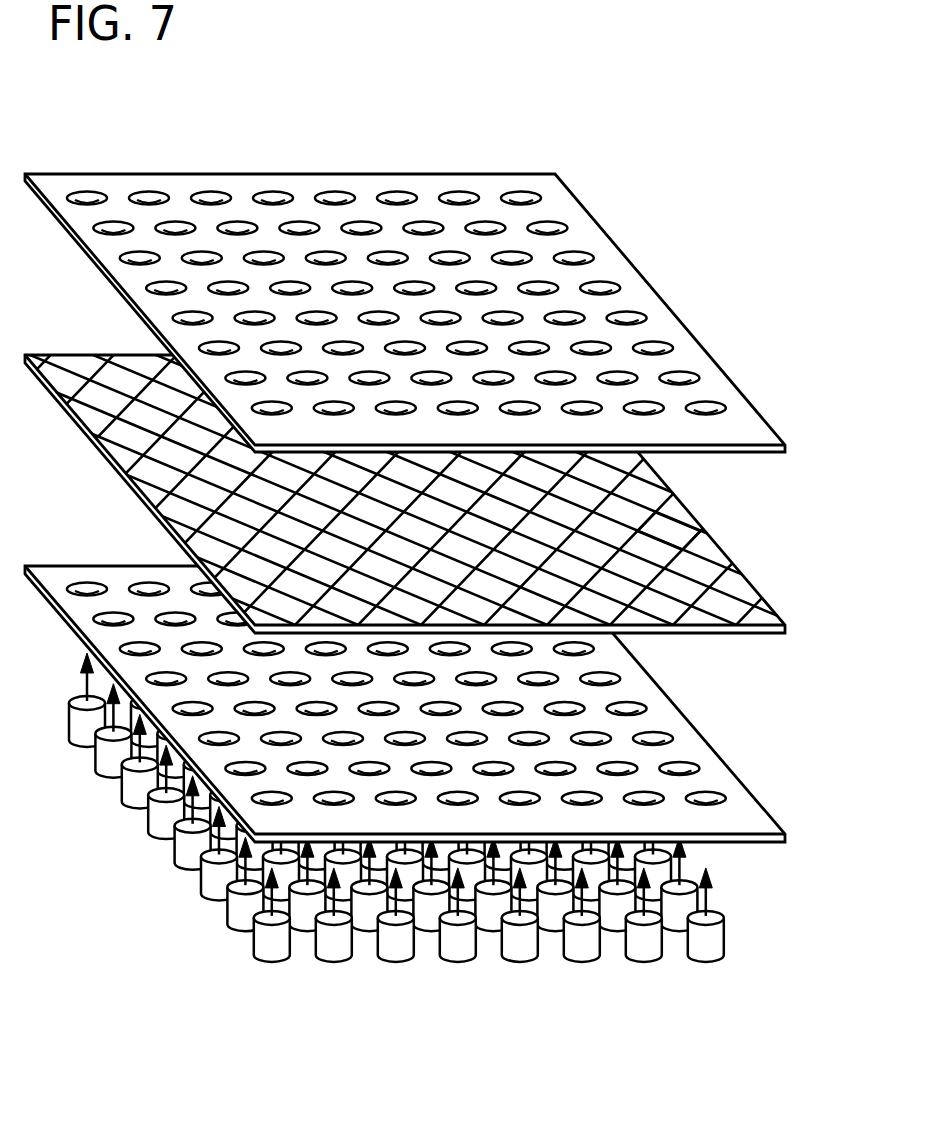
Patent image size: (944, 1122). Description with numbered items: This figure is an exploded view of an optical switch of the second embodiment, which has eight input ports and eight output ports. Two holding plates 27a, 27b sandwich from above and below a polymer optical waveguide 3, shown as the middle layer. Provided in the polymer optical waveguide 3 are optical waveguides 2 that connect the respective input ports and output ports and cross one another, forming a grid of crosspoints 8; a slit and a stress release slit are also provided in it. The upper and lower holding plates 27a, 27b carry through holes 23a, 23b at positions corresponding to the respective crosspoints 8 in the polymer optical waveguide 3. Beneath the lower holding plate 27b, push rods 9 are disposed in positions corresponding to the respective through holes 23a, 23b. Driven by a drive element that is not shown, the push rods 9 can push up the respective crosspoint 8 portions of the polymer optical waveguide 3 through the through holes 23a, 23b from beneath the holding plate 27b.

The optical waveguides 2 is at (153, 461).
The polymer optical waveguide 3 is at (764, 592).
The crosspoints 8 is at (680, 550).
The push rods 9 is at (272, 940).
The through holes 23a is at (628, 316).
The through holes 23b is at (652, 737).
The holding plate 27a is at (706, 386).
The holding plate 27b is at (706, 775).